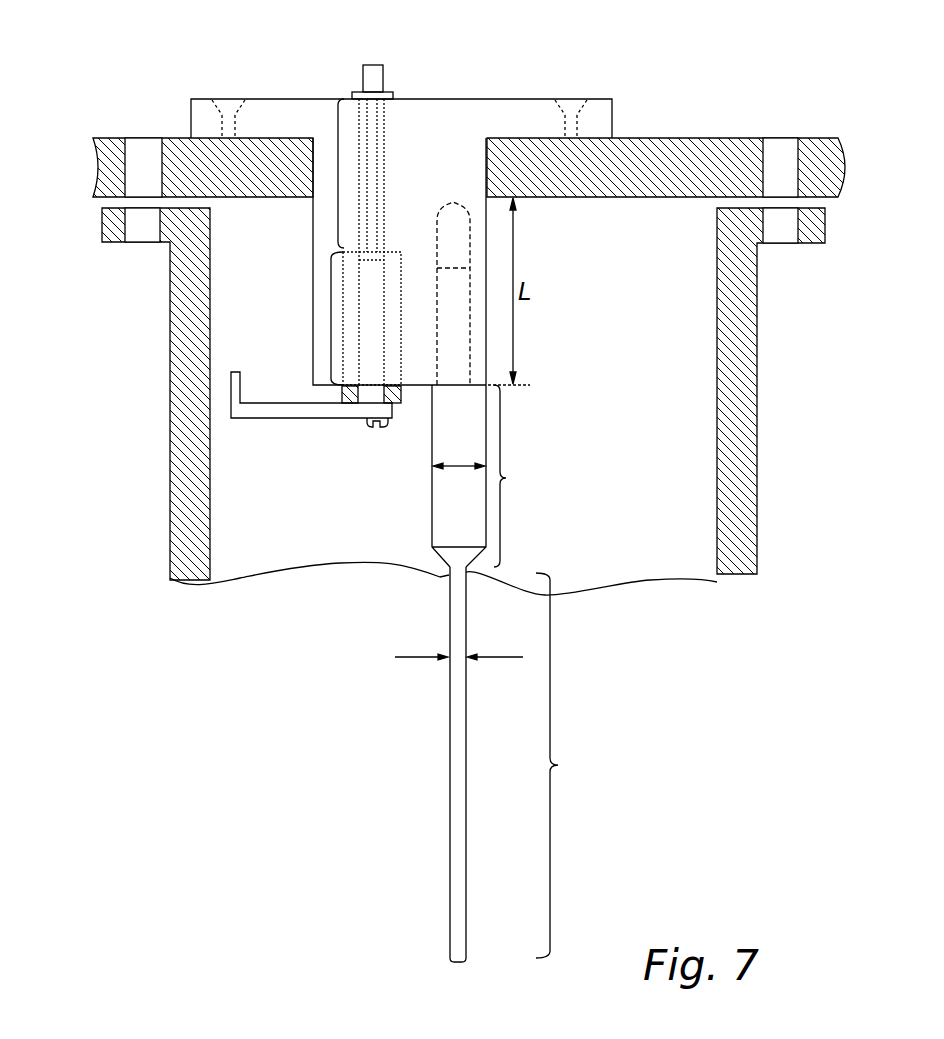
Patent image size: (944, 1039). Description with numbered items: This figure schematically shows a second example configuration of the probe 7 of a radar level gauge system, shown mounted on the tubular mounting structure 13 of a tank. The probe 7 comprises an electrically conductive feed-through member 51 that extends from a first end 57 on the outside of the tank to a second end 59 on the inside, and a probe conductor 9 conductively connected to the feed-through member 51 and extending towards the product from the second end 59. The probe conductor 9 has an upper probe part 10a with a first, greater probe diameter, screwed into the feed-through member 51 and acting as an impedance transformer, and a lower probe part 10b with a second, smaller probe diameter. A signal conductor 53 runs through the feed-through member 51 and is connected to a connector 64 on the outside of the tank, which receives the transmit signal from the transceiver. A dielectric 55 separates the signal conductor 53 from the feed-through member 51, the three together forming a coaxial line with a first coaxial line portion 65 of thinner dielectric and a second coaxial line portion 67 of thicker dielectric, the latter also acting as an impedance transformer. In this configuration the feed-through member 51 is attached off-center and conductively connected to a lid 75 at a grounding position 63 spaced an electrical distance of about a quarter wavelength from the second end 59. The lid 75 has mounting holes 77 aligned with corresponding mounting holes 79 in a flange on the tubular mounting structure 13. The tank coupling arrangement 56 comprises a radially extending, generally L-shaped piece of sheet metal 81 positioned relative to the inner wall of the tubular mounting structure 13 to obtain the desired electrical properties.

The probe 7 is at (572, 318).
The probe conductor 9 is at (588, 697).
The upper probe part 10a is at (497, 476).
The lower probe part 10b is at (504, 764).
The tubular mounting structure 13 is at (170, 412).
The feed-through member 51 is at (318, 228).
The signal conductor 53 is at (372, 147).
The dielectric 55 is at (384, 183).
The tank coupling arrangement 56 is at (250, 445).
The first end 57 is at (440, 99).
The second end 59 is at (423, 387).
The grounding position 63 is at (488, 198).
The connector 64 is at (372, 65).
The first coaxial line portion 65 is at (340, 173).
The second coaxial line portion 67 is at (332, 318).
The lid 75 is at (208, 168).
The mounting holes 77 is at (143, 150).
The mounting holes 79 is at (143, 243).
The L-shaped piece of sheet metal 81 is at (280, 410).